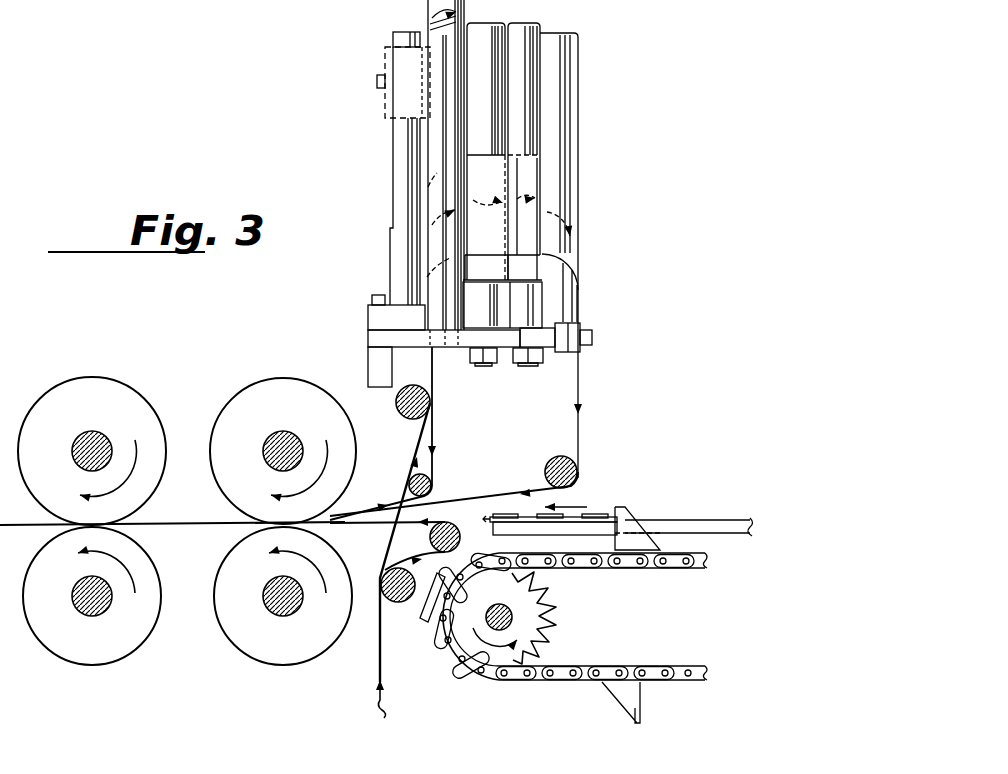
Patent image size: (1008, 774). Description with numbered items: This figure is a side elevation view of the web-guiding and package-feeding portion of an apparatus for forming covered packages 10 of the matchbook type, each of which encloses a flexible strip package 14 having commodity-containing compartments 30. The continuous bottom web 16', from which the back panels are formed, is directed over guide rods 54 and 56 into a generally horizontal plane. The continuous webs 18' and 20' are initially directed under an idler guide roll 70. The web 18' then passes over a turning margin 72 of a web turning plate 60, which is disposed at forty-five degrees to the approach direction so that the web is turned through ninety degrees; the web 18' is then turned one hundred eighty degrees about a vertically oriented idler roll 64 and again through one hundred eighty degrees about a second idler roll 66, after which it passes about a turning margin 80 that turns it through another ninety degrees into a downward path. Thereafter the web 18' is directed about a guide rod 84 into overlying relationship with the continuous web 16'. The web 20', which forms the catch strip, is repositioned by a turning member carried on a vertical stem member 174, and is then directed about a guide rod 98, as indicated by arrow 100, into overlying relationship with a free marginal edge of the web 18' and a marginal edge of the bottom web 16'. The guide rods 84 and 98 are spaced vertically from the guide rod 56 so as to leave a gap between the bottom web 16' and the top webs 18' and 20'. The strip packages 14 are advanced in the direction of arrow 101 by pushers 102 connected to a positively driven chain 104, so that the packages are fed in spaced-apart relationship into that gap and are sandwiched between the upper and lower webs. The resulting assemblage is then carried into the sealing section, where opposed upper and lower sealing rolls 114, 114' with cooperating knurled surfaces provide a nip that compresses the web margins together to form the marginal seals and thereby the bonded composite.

The covered package 10 is at (599, 18).
The strip package 14 is at (613, 512).
The continuous web 16' is at (376, 555).
The continuous web 18' is at (383, 475).
The continuous web 20' is at (366, 452).
The commodity-containing compartment 30 is at (614, 514).
The guide rod 54 is at (400, 604).
The guide rod 56 is at (447, 524).
The web turning plate 60 is at (447, 127).
The idler roll 64 is at (483, 107).
The idler roll 66 is at (520, 72).
The idler guide roll 70 is at (422, 395).
The turning margin 72 is at (437, 153).
The turning margin 80 is at (553, 133).
The guide rod 84 is at (557, 457).
The guide rod 98 is at (427, 480).
The arrow 100 is at (387, 499).
The arrow 101 is at (576, 500).
The pusher 102 is at (636, 546).
The chain 104 is at (605, 569).
The upper sealing roll 114 is at (187, 425).
The lower sealing roll 114' is at (187, 613).
The vertical stem member 174 is at (403, 207).